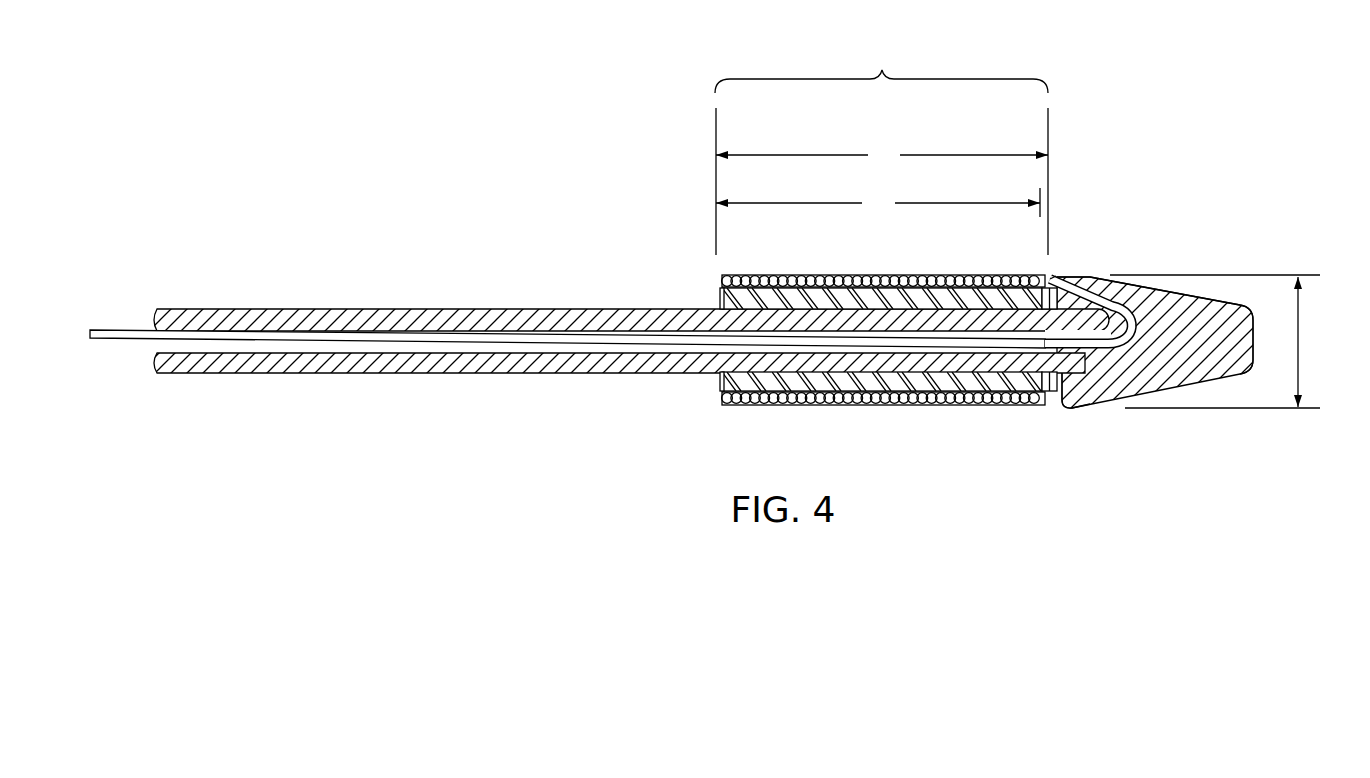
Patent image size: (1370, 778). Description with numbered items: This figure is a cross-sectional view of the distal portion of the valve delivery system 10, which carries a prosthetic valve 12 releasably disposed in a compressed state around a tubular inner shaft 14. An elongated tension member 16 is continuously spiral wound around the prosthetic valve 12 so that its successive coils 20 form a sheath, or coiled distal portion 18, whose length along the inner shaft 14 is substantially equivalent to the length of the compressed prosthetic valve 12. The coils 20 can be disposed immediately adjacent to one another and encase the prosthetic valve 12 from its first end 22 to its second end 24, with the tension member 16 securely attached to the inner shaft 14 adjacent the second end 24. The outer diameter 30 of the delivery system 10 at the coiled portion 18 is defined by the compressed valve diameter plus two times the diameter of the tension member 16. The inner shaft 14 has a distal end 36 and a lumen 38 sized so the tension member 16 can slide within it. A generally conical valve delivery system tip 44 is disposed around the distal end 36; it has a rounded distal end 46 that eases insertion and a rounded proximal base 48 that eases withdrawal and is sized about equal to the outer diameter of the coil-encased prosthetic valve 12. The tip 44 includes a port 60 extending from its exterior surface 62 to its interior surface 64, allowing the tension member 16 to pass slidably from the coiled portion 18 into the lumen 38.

The valve delivery system 10 is at (334, 140).
The prosthetic valve 12 is at (850, 378).
The inner shaft 14 is at (947, 368).
The elongated tension member 16 is at (100, 328).
The coiled distal portion 18 is at (881, 147).
The coils 20 is at (778, 273).
The first end 22 is at (723, 395).
The second end 24 is at (1053, 387).
The outer diameter 30 is at (1302, 342).
The distal end 36 is at (1090, 412).
The lumen 38 is at (412, 358).
The valve delivery system tip 44 is at (1177, 377).
The distal end 46 is at (1257, 337).
The proximal base 48 is at (1058, 270).
The port 60 is at (1070, 272).
The exterior surface 62 is at (1158, 288).
The interior surface 64 is at (1115, 293).